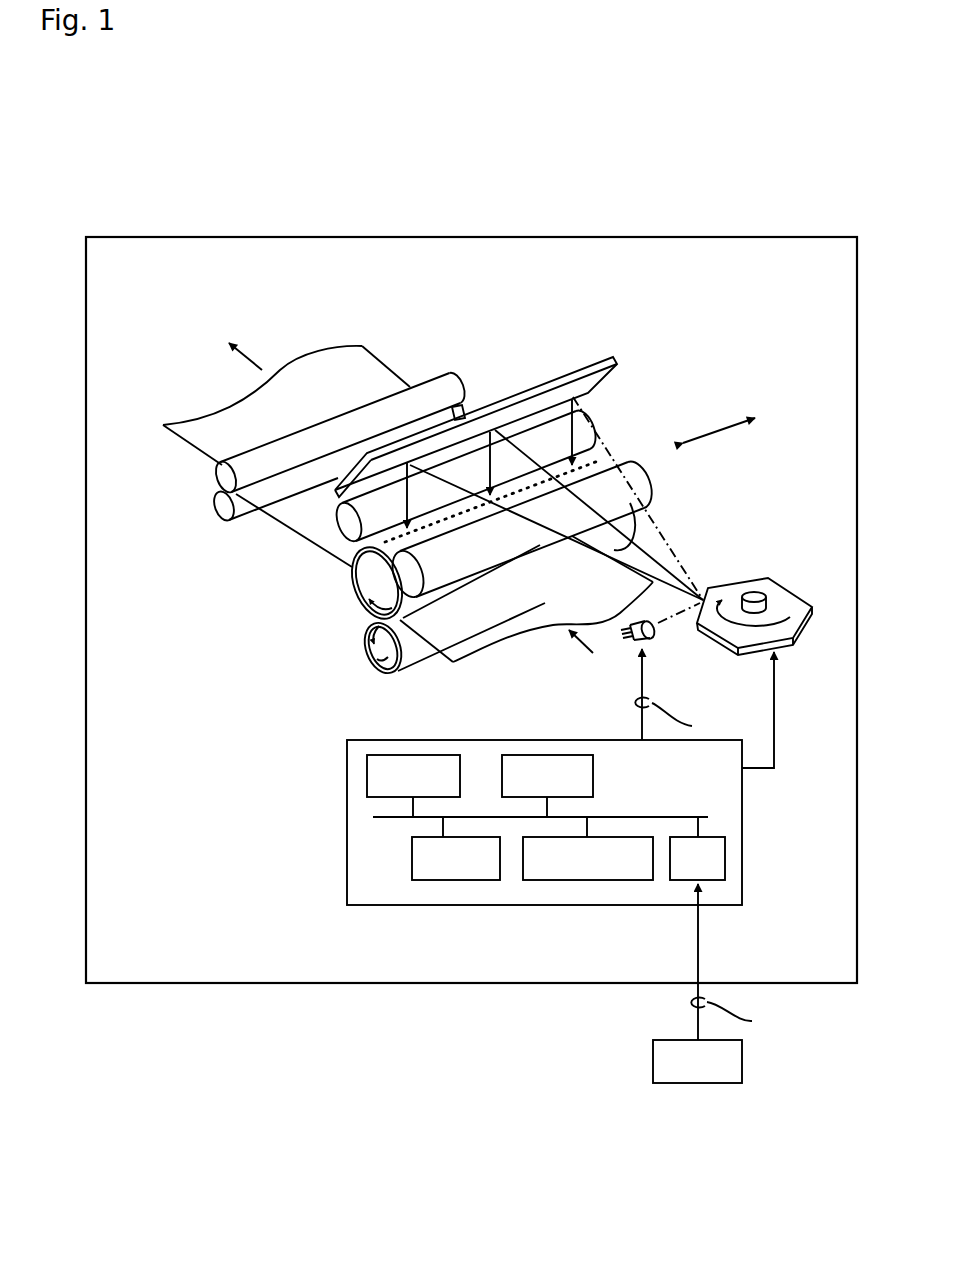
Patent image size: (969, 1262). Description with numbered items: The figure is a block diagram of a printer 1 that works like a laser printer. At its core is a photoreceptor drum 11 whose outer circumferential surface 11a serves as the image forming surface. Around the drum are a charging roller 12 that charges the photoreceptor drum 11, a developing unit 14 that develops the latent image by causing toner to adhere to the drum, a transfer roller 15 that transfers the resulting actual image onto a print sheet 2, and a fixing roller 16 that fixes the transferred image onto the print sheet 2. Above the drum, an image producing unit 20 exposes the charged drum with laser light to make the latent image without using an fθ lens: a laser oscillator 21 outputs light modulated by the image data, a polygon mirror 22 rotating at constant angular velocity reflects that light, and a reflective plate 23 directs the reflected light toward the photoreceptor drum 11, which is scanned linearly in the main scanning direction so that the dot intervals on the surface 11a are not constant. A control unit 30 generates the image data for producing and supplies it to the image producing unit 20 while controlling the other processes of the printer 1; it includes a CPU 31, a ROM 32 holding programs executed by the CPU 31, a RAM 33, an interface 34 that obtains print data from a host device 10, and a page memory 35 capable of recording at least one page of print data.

The printer 1 is at (666, 231).
The print sheet 2 is at (313, 350).
The host device 10 is at (742, 1073).
The photoreceptor drum 11 is at (360, 593).
The outer circumferential surface 11a is at (353, 568).
The charging roller 12 is at (343, 517).
The developing unit 14 is at (629, 471).
The transfer roller 15 is at (373, 657).
The fixing roller 16 is at (463, 375).
The image producing unit 20 is at (698, 497).
The laser oscillator 21 is at (652, 637).
The polygon mirror 22 is at (790, 598).
The reflective plate 23 is at (587, 357).
The control unit 30 is at (518, 907).
The CPU 31 is at (415, 760).
The ROM 32 is at (437, 882).
The RAM 33 is at (551, 760).
The interface 34 is at (725, 858).
The page memory 35 is at (575, 882).